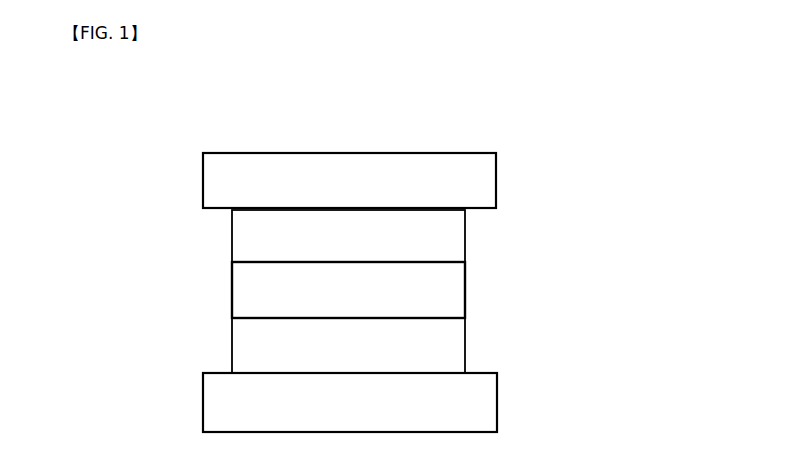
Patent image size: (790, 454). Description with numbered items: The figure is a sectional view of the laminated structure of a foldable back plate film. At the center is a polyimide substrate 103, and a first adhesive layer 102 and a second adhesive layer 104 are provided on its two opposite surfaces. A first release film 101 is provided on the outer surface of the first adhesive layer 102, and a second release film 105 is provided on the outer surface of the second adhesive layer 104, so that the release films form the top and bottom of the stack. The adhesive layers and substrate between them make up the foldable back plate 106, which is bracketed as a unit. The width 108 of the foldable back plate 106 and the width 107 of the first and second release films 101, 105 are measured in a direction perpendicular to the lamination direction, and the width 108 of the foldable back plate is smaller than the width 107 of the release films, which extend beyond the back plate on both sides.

The first release film 101 is at (506, 181).
The first adhesive layer 102 is at (474, 233).
The polyimide substrate 103 is at (482, 286).
The second adhesive layer 104 is at (479, 342).
The second release film 105 is at (510, 397).
The foldable back plate 106 is at (184, 288).
The width of the first and second release films 107 is at (345, 115).
The width of the foldable back plate 108 is at (349, 397).